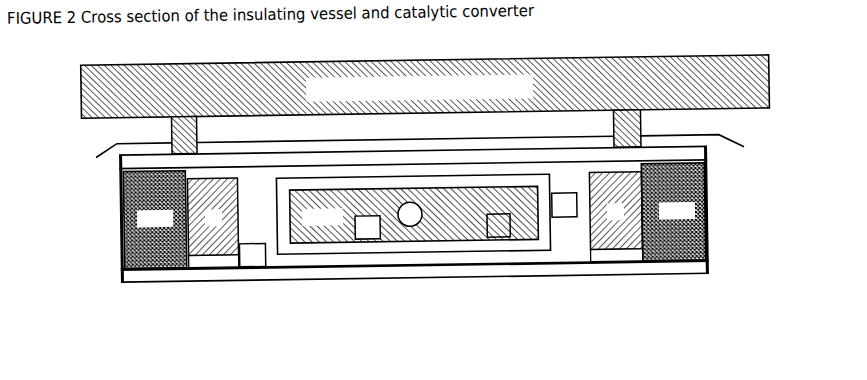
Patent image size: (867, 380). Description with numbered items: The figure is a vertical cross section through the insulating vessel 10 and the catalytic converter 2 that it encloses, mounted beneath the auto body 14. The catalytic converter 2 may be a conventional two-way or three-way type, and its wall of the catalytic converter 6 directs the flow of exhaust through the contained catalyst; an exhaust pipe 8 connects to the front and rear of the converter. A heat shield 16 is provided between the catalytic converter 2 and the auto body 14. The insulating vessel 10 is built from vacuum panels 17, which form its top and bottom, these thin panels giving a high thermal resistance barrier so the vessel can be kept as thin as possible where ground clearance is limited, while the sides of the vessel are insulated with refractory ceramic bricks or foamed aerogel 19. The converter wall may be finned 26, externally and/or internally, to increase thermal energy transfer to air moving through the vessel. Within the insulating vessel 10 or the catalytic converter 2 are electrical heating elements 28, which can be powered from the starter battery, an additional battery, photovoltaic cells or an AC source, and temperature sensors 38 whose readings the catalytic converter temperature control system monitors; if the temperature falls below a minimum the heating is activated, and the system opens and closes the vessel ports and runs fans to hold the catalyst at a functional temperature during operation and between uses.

The auto body 14 is at (82, 102).
The heat shield 16 is at (85, 152).
The vacuum panels 17 is at (122, 162).
The insulating vessel 10 is at (364, 258).
The refractory ceramic bricks or foamed aerogel 19 is at (176, 265).
The fins 26 is at (215, 252).
The catalytic converter 2 is at (305, 252).
The wall of the catalytic converter 6 is at (343, 241).
The electrical heating elements 28 is at (466, 216).
The temperature sensors 38 is at (375, 240).
The exhaust pipe 8 is at (410, 214).